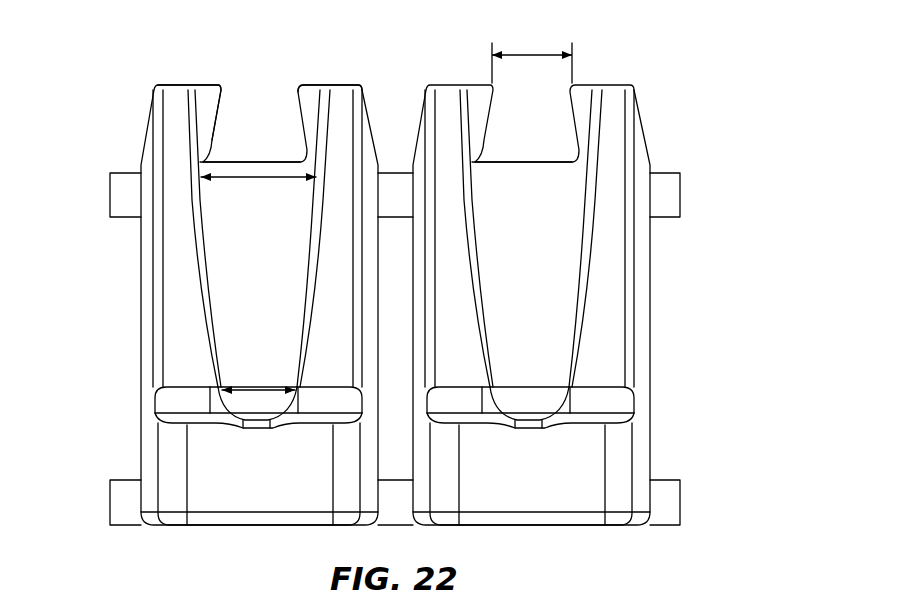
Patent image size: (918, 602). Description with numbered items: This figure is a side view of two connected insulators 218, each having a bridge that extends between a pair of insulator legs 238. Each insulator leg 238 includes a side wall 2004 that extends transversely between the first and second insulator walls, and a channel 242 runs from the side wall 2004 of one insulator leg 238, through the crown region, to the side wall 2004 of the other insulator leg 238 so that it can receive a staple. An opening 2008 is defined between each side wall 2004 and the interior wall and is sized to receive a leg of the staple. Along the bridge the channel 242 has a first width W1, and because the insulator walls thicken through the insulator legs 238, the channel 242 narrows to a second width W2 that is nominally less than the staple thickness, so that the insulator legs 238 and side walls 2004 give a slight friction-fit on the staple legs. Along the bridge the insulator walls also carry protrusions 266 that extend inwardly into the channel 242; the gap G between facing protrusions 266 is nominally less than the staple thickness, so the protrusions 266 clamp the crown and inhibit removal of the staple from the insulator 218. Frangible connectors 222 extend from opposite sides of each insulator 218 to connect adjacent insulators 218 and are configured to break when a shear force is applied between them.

The insulator 218 is at (160, 266).
The insulator leg 238 is at (183, 333).
The protrusion 266 is at (216, 88).
The channel 242 is at (267, 160).
The opening 2008 is at (541, 406).
The side wall 2004 is at (258, 443).
The frangible connector 222 is at (118, 505).
The gap G is at (532, 49).
The first width W1 is at (243, 178).
The second width W2 is at (255, 386).